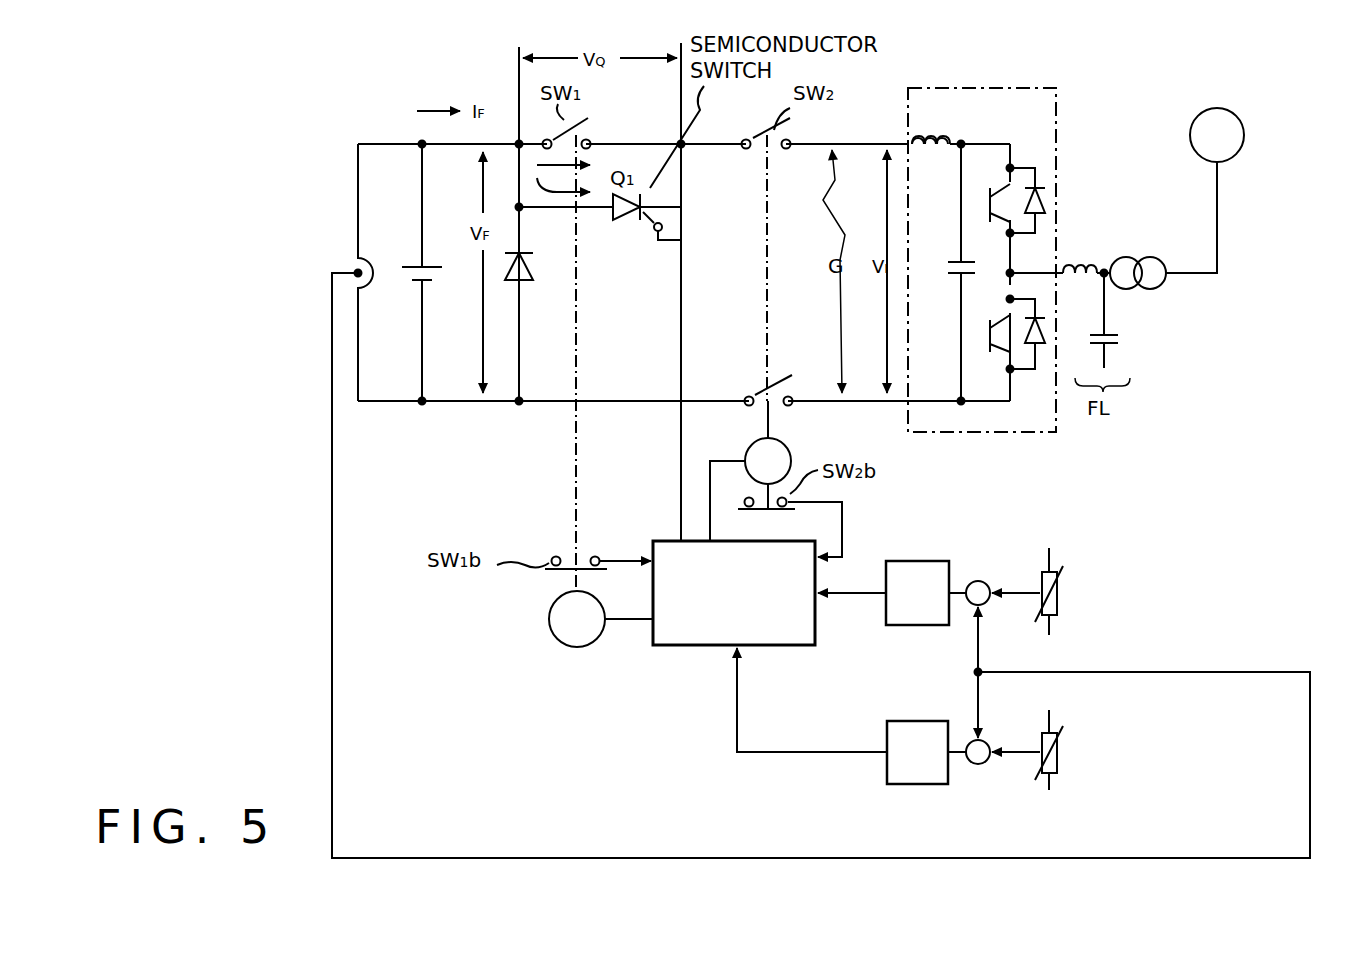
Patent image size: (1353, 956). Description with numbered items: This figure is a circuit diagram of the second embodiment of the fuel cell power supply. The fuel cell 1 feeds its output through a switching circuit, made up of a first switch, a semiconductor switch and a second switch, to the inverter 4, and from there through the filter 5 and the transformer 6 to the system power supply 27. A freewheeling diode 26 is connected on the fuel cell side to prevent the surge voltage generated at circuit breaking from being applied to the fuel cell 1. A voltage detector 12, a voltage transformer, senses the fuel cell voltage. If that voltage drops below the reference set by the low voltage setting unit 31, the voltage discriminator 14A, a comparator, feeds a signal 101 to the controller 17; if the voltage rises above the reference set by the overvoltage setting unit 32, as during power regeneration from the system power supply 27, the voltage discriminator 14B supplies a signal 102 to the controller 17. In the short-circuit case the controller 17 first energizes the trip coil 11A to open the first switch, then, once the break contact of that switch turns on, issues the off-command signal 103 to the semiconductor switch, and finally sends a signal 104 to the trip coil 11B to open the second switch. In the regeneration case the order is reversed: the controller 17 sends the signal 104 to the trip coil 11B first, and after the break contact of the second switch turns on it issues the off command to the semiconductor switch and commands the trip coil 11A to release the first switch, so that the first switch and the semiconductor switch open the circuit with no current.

The fuel cell 1 is at (437, 264).
The voltage detector 12 is at (372, 284).
The freewheeling diode 26 is at (514, 286).
The inverter 4 is at (960, 90).
The system power supply 27 is at (1194, 122).
The transformer 6 is at (1168, 283).
The filter 5 is at (1124, 338).
The signal 104 is at (718, 457).
The trip coil 11B is at (790, 451).
The off-command signal 103 is at (680, 478).
The voltage discriminator 14A is at (925, 560).
The low voltage setting unit 31 is at (1061, 572).
The signal 101 is at (857, 600).
The trip coil 11A is at (575, 648).
The controller 17 is at (693, 650).
The signal 102 is at (791, 760).
The overvoltage setting unit 32 is at (1058, 742).
The voltage discriminator 14B is at (884, 786).